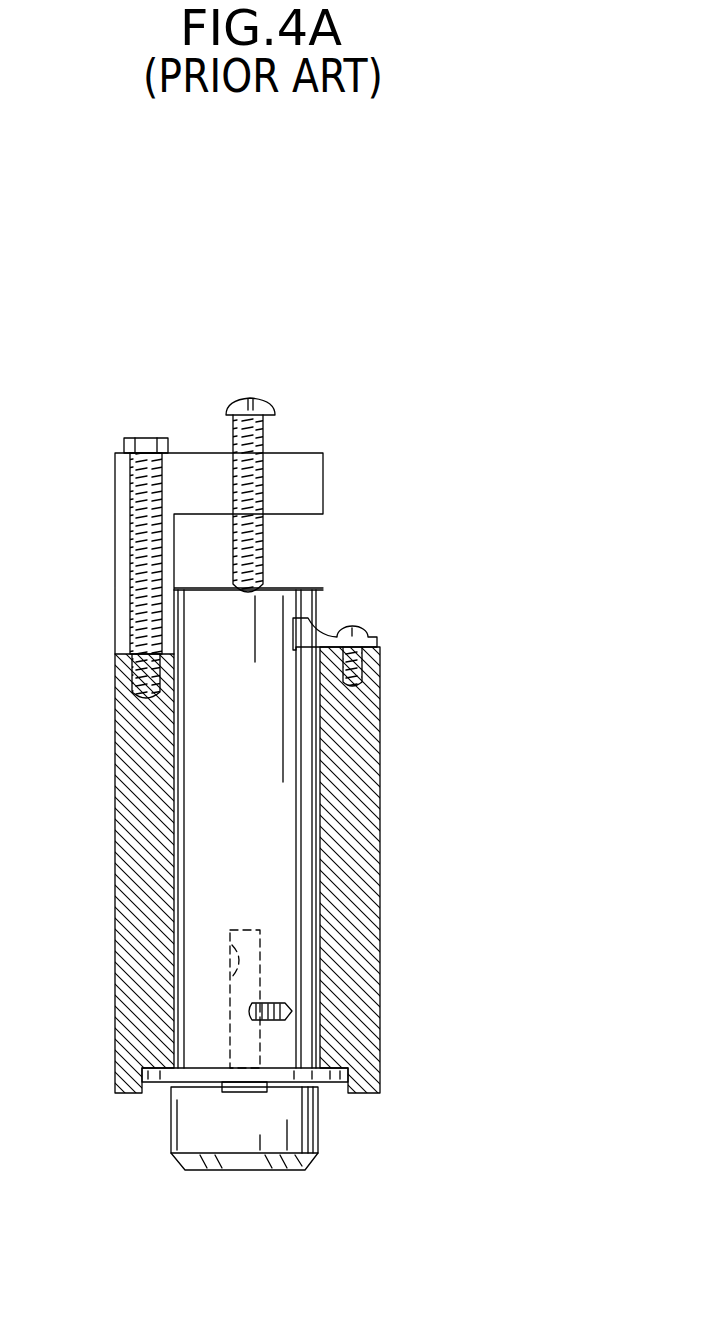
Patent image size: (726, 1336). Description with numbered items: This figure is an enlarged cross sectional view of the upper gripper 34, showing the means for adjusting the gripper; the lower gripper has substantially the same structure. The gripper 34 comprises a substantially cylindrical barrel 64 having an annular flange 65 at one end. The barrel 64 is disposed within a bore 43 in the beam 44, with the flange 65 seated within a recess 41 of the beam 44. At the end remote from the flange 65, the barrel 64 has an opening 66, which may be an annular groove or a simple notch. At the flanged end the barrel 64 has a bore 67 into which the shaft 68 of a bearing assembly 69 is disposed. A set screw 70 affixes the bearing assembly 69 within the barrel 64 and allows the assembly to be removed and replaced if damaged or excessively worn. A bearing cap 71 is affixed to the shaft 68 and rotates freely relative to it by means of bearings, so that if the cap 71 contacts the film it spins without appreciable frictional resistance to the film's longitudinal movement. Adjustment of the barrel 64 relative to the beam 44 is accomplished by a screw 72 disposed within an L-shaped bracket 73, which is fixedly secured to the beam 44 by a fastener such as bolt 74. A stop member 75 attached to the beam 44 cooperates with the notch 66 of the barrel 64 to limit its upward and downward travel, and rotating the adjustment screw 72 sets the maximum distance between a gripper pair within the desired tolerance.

The upper gripper 34 is at (422, 597).
The recess 41 is at (330, 1066).
The bore 43 is at (326, 725).
The beam 44 is at (380, 870).
The barrel 64 is at (269, 795).
The annular flange 65 is at (160, 1085).
The opening 66 is at (327, 627).
The bore 67 is at (232, 943).
The shaft 68 is at (243, 930).
The bearing assembly 69 is at (318, 1170).
The set screw 70 is at (292, 1003).
The bearing cap 71 is at (232, 1138).
The adjustment screw 72 is at (265, 400).
The L-shaped bracket 73 is at (324, 490).
The bolt 74 is at (143, 440).
The stop member 75 is at (378, 636).